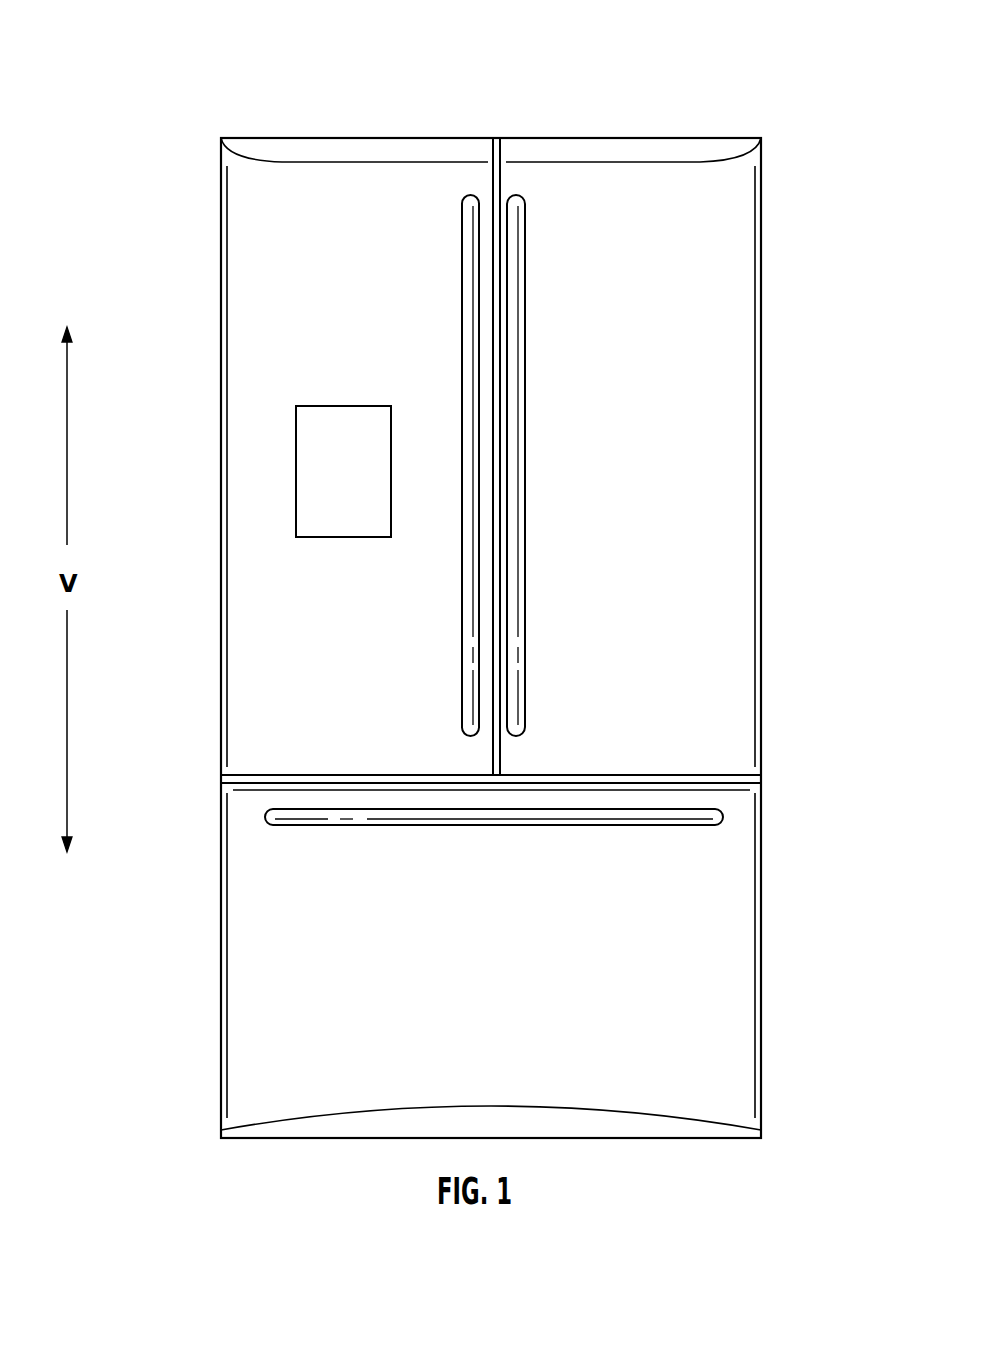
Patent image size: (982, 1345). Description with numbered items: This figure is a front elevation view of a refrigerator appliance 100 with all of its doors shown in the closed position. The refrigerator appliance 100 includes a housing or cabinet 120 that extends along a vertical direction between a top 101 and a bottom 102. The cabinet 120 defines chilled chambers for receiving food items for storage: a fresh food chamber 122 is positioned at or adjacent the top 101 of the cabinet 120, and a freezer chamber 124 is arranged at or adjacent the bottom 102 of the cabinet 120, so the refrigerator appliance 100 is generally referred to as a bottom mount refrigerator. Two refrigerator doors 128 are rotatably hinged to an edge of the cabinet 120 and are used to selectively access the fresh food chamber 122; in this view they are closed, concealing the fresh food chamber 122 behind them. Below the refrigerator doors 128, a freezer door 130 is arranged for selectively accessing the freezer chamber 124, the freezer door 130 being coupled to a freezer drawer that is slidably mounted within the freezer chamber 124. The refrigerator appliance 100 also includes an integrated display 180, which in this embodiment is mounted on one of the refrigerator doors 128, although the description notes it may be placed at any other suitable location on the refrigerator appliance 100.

The refrigerator appliance 100 is at (773, 80).
The top 101 is at (209, 130).
The bottom 102 is at (213, 1130).
The cabinet 120 is at (761, 779).
The fresh food chamber 122 is at (714, 566).
The freezer chamber 124 is at (692, 1005).
The refrigerator doors 128 is at (333, 192).
The freezer door 130 is at (252, 985).
The integrated display 180 is at (296, 460).